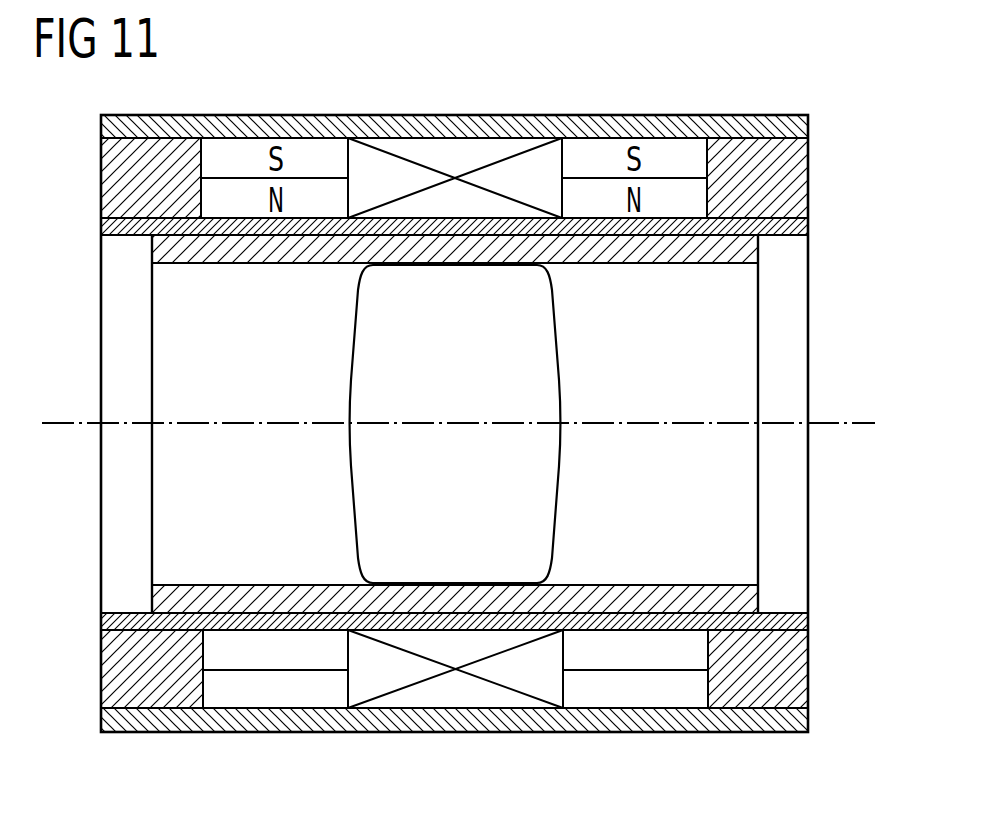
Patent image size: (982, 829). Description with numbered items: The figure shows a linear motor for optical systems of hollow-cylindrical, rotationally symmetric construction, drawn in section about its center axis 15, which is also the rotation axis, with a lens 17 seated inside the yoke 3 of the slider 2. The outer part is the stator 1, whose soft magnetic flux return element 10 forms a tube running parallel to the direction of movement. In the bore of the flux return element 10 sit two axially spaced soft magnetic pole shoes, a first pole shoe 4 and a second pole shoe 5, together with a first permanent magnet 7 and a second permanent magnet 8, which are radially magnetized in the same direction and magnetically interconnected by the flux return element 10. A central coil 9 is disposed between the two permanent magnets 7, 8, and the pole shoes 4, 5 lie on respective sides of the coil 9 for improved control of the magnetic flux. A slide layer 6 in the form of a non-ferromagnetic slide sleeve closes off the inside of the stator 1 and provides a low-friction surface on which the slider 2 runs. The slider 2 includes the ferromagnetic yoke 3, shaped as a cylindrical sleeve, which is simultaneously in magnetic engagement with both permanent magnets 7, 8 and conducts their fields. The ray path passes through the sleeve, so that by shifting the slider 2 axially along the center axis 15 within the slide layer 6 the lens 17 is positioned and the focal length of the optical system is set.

The stator 1 is at (782, 180).
The slider 2 is at (718, 362).
The yoke 3 is at (680, 598).
The first pole shoe 4 is at (155, 698).
The second pole shoe 5 is at (762, 698).
The slide layer 6 is at (102, 620).
The first permanent magnet 7 is at (240, 698).
The second permanent magnet 8 is at (676, 698).
The coil 9 is at (468, 698).
The magnetic flux return element 10 is at (410, 722).
The center axis 15 is at (55, 428).
The lens 17 is at (545, 357).